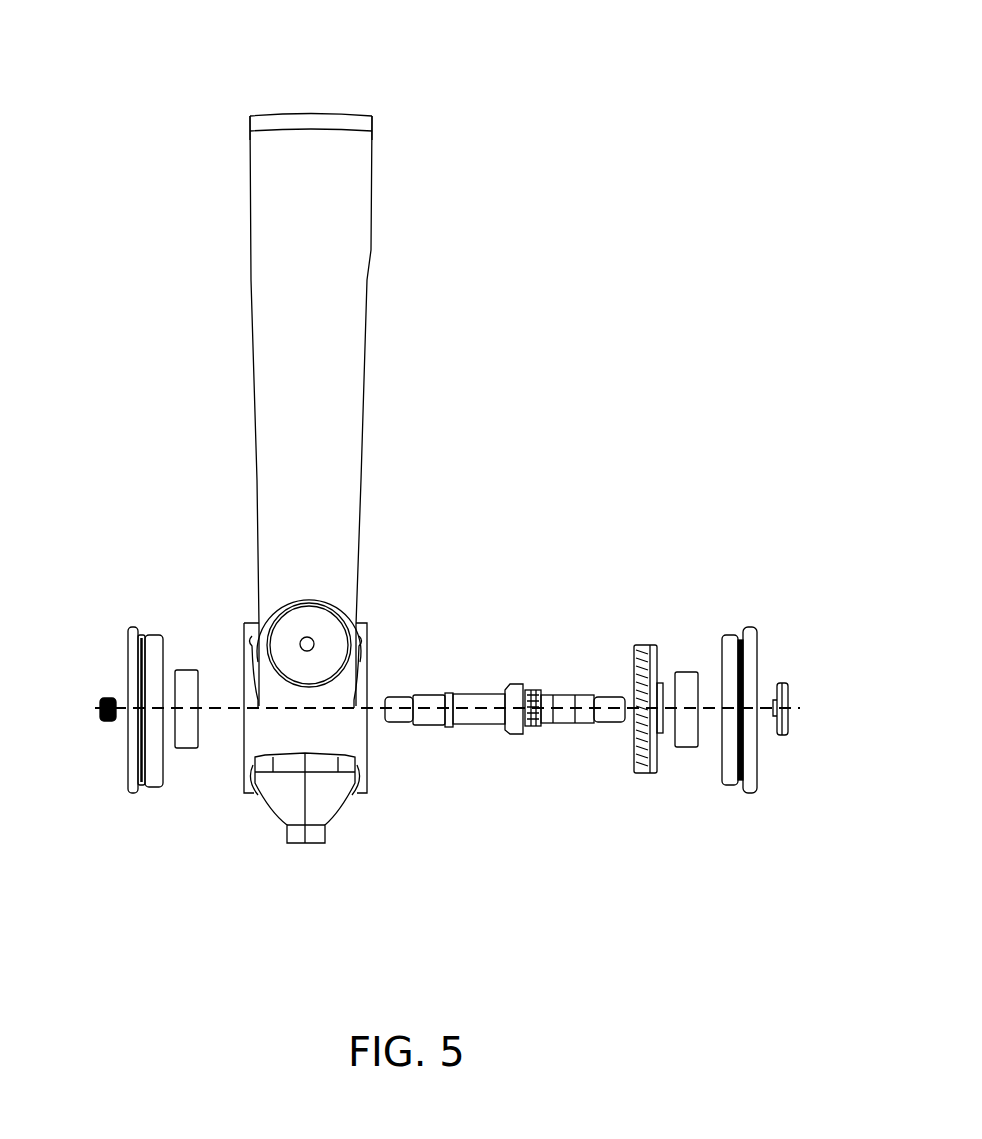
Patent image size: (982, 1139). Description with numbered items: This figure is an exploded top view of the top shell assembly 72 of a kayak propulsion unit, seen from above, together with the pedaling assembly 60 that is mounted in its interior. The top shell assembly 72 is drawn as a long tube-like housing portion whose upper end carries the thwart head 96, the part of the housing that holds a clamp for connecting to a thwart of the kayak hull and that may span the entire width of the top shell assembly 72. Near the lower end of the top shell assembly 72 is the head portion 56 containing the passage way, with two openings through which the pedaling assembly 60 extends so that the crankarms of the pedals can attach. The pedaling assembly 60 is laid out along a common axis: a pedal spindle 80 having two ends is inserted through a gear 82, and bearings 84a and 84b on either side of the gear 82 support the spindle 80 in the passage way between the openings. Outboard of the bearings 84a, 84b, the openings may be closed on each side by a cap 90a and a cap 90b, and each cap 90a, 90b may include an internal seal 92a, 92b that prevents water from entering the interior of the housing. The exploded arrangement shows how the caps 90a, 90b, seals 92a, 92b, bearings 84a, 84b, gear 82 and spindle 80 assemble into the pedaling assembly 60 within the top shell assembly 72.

The thwart head 96 is at (310, 112).
The top shell assembly 72 is at (337, 380).
The head assembly 56 is at (345, 608).
The cap 90a is at (128, 652).
The internal seal 92a is at (150, 632).
The bearing 84a is at (189, 749).
The pedal spindle 80 is at (487, 694).
The gear 82 is at (645, 646).
The bearing 84b is at (684, 748).
The internal seal 92b is at (745, 632).
The cap 90b is at (758, 637).
The pedaling assembly 60 is at (806, 836).